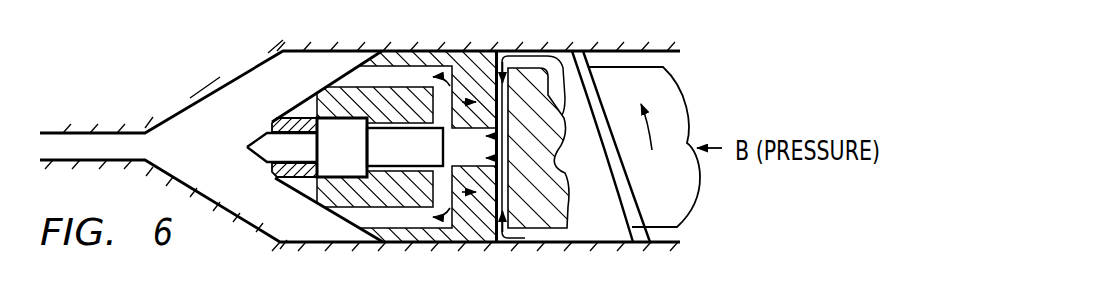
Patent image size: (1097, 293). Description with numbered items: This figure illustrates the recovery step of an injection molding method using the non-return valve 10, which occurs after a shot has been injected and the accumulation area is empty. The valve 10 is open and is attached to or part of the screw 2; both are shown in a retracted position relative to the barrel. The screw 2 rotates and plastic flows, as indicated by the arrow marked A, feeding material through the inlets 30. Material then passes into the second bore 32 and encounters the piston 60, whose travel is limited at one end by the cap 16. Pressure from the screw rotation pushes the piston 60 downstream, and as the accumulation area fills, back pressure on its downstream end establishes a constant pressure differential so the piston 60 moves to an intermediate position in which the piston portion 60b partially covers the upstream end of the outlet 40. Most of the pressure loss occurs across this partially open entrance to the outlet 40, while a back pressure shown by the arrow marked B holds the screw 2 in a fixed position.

The non-return valve 10 is at (256, 84).
The cap 16 is at (272, 170).
The piston 60 is at (304, 188).
The piston portion 60b is at (398, 150).
The outlet 40 is at (353, 213).
The inlet 30 is at (508, 80).
The second bore 32 is at (553, 152).
The screw 2 is at (662, 198).